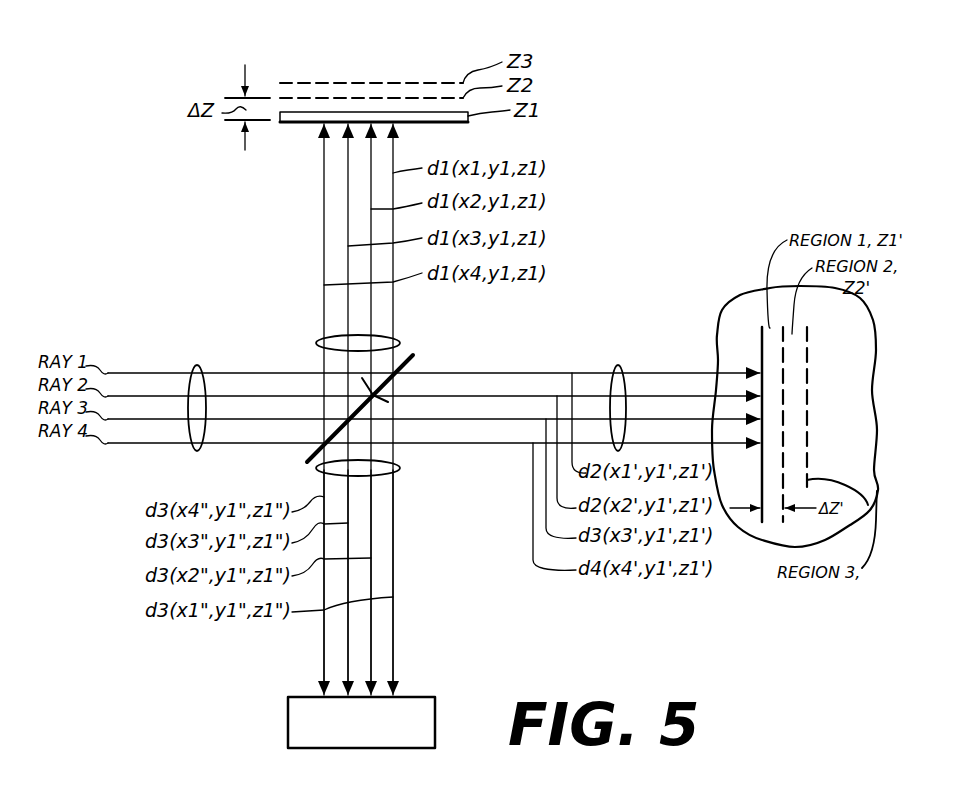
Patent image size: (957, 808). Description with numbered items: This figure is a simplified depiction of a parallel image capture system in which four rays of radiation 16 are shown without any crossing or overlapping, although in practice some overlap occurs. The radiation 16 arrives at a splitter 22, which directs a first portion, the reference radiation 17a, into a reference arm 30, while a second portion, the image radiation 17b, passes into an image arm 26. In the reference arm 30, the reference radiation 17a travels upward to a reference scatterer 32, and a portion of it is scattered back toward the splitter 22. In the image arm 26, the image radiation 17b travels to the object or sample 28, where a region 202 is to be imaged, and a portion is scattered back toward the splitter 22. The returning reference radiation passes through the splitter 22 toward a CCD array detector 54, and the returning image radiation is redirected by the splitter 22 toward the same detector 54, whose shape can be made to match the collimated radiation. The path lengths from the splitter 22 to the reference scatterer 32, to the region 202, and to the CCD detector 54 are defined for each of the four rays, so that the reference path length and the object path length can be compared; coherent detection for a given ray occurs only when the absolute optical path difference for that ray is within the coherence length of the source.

The radiation 16 is at (194, 366).
The reference radiation 17a is at (317, 344).
The image radiation 17b is at (616, 366).
The splitter 22 is at (416, 361).
The image arm 26 is at (479, 459).
The object or sample 28 is at (741, 298).
The reference arm 30 is at (305, 240).
The reference scatterer 32 is at (465, 123).
The CCD array detector 54 is at (401, 732).
The region to be imaged 202 is at (722, 326).